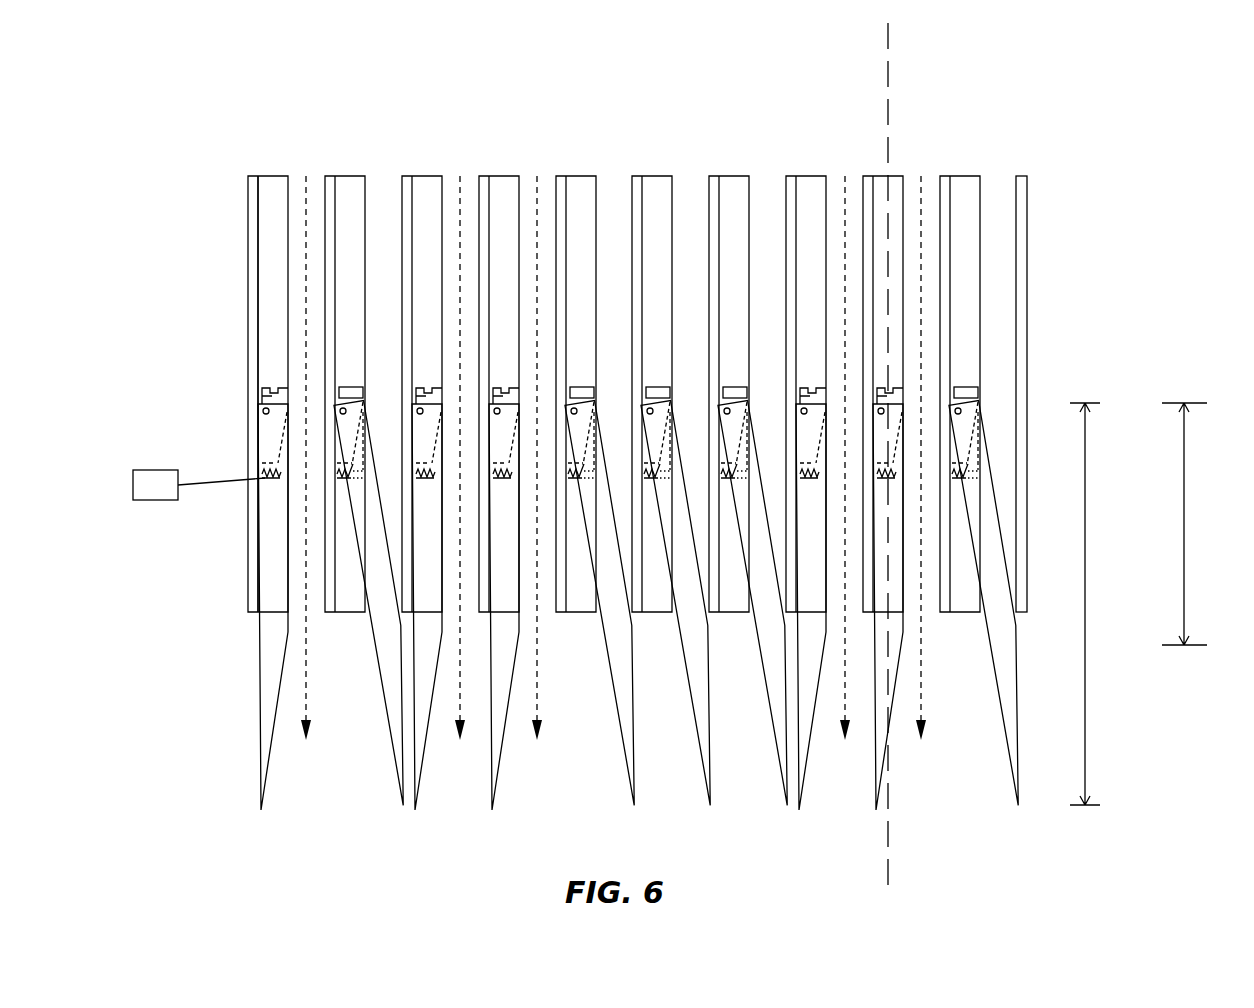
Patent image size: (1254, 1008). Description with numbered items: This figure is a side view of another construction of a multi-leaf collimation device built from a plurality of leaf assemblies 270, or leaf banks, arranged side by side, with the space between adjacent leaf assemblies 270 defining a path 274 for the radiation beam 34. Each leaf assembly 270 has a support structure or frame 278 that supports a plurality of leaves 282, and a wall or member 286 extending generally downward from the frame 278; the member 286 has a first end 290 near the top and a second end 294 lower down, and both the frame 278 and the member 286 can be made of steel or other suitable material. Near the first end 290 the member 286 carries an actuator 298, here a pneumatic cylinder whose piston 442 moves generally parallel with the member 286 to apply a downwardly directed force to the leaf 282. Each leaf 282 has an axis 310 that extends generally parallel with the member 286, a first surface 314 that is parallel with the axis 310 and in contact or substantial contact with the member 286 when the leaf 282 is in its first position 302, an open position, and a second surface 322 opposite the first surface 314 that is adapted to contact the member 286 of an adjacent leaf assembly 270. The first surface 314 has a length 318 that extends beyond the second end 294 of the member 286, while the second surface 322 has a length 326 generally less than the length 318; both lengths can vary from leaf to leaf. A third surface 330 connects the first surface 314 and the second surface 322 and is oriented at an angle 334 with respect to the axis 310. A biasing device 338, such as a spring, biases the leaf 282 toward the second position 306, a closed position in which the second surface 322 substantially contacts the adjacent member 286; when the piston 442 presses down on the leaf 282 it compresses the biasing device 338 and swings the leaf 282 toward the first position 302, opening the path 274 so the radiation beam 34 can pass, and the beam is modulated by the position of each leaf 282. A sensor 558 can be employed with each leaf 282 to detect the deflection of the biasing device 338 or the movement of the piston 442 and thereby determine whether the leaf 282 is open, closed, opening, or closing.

The radiation beam 34 is at (308, 172).
The leaf assembly 270 is at (962, 142).
The path 274 is at (381, 173).
The frame 278 is at (566, 176).
The leaf 282 is at (239, 607).
The member 286 is at (208, 394).
The first end 290 is at (212, 206).
The second end 294 is at (202, 619).
The actuator 298 is at (223, 394).
The first position 302 is at (251, 652).
The second position 306 is at (391, 840).
The axis 310 is at (888, 33).
The first surface 314 is at (910, 493).
The length 318 is at (1087, 541).
The second surface 322 is at (536, 493).
The length 326 is at (1186, 497).
The third surface 330 is at (539, 607).
The angle 334 is at (928, 607).
The biasing device 338 is at (379, 603).
The piston 442 is at (230, 433).
The sensor 558 is at (140, 468).